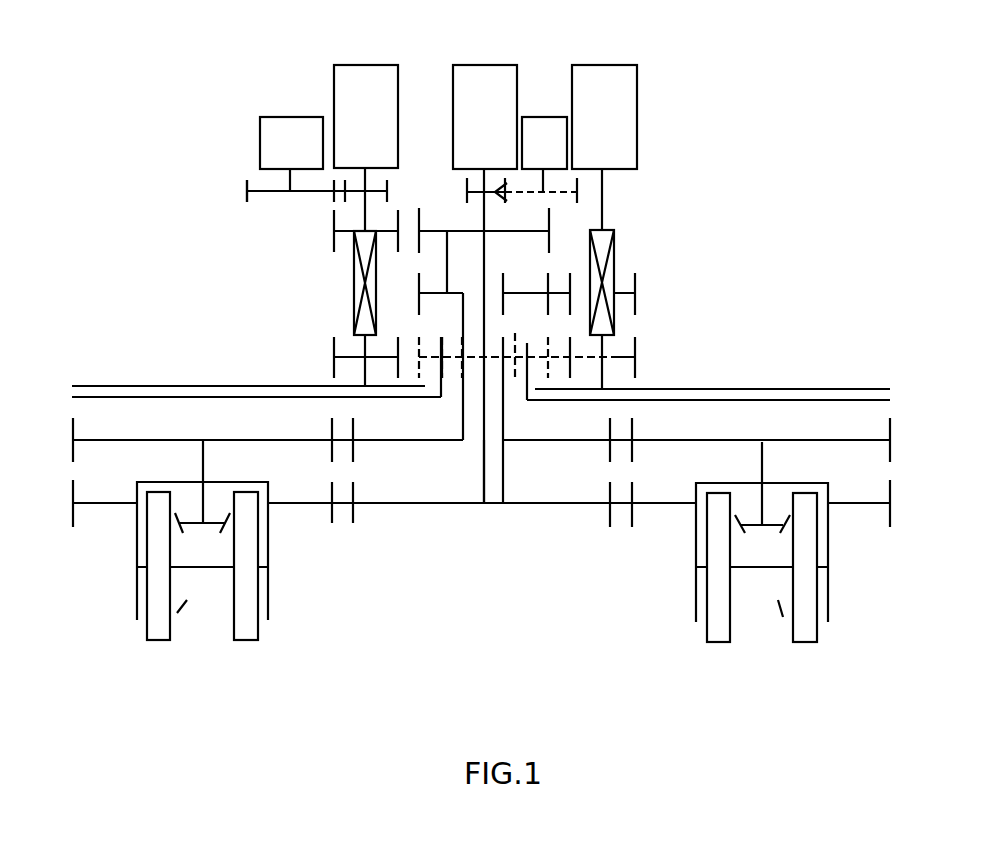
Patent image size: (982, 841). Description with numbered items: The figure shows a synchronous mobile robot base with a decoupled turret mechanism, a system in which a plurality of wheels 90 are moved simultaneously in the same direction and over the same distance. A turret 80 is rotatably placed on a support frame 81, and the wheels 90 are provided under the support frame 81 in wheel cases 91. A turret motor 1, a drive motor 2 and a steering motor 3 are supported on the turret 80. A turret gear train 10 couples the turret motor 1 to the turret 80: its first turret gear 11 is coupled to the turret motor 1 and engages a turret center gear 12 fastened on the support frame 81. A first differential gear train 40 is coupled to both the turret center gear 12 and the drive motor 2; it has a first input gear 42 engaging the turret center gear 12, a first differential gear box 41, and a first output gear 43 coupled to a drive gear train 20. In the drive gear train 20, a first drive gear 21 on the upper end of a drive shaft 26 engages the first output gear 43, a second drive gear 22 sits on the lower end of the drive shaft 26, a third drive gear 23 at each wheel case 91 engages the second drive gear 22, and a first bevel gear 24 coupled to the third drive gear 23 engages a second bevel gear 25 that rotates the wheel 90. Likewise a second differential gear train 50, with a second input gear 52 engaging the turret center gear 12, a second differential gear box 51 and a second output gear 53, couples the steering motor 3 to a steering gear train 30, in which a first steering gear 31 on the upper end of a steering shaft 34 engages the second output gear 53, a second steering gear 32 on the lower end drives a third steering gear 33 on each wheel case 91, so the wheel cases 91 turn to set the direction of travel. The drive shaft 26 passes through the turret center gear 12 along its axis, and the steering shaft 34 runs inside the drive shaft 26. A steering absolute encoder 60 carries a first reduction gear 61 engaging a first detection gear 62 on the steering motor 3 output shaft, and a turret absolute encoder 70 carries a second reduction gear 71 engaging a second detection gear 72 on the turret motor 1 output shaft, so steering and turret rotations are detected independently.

The turret motor 1 is at (494, 76).
The drive motor 2 is at (607, 78).
The steering motor 3 is at (380, 75).
The turret gear train 10 is at (591, 359).
The first turret gear 11 is at (516, 343).
The turret center gear 12 is at (550, 370).
The drive gear train 20 is at (622, 501).
The first drive gear 21 is at (452, 297).
The second drive gear 22 is at (582, 440).
The third drive gear 23 is at (680, 440).
The first bevel gear 24 is at (733, 535).
The second bevel gear 25 is at (731, 631).
The drive shaft 26 is at (461, 400).
The steering gear train 30 is at (363, 511).
The first steering gear 31 is at (447, 335).
The second steering gear 32 is at (360, 503).
The third steering gear 33 is at (285, 503).
The steering shaft 34 is at (478, 487).
The first differential gear train 40 is at (650, 294).
The first differential gear box 41 is at (617, 252).
The first input gear 42 is at (636, 340).
The first output gear 43 is at (636, 292).
The second differential gear train 50 is at (273, 294).
The second differential gear box 51 is at (355, 290).
The second input gear 52 is at (311, 356).
The second output gear 53 is at (334, 231).
The steering absolute encoder 60 is at (297, 127).
The first reduction gear 61 is at (265, 190).
The first detection gear 62 is at (334, 191).
The turret absolute encoder 70 is at (545, 135).
The second reduction gear 71 is at (577, 189).
The second detection gear 72 is at (510, 180).
The turret 80 is at (800, 389).
The support frame 81 is at (158, 386).
The wheel 90 is at (160, 628).
The wheel case 91 is at (137, 588).